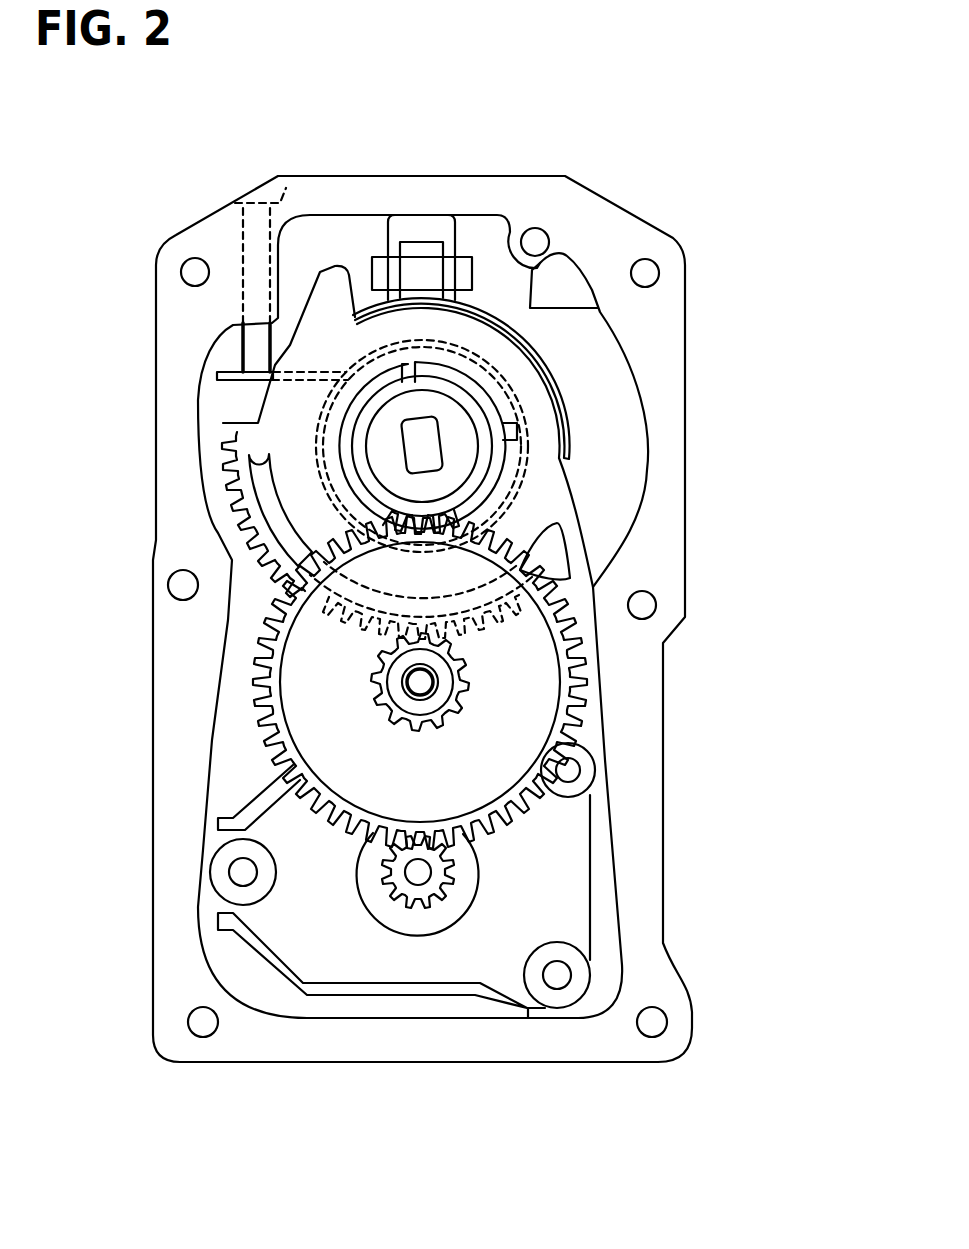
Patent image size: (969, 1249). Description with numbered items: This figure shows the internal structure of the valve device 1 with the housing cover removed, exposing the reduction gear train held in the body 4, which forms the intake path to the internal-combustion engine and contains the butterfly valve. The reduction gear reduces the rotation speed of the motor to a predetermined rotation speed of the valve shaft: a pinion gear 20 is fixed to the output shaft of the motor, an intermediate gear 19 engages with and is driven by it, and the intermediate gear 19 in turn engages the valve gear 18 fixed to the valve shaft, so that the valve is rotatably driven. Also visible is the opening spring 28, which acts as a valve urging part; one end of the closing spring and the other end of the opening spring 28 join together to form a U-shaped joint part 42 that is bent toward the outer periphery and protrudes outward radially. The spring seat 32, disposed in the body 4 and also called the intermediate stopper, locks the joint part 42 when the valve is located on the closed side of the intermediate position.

The valve device 1 is at (727, 100).
The body 4 is at (668, 262).
The valve gear 18 is at (532, 412).
The intermediate gear 19 is at (547, 617).
The pinion gear 20 is at (452, 882).
The opening spring 28 is at (312, 457).
The spring seat 32 is at (262, 358).
The joint part 42 is at (222, 379).